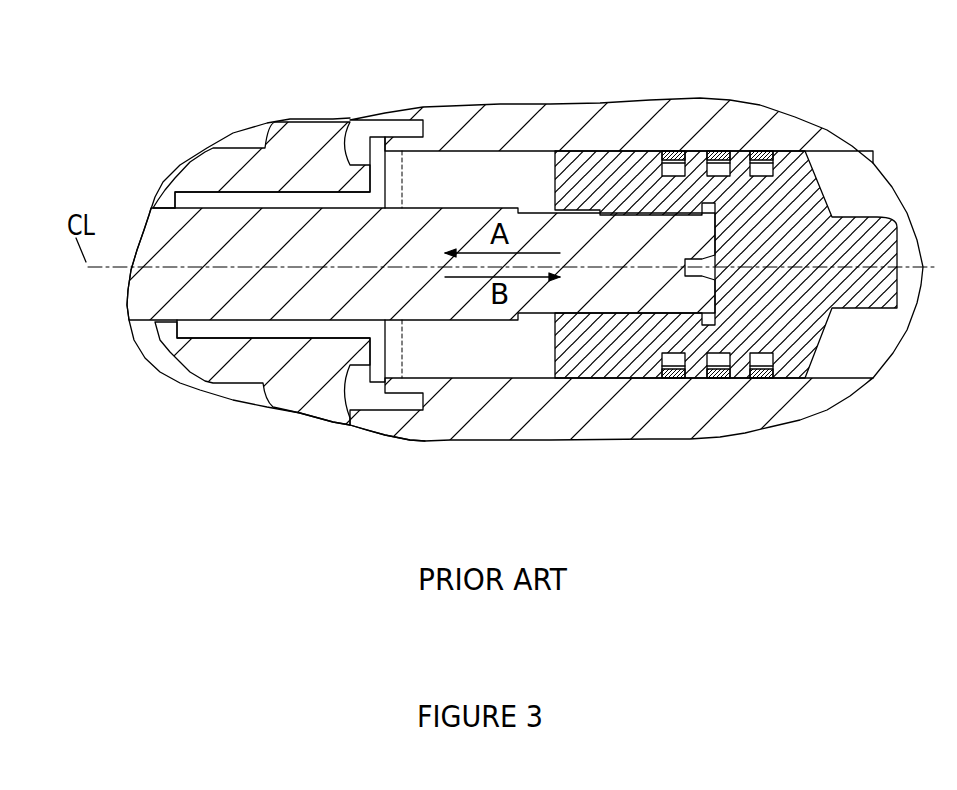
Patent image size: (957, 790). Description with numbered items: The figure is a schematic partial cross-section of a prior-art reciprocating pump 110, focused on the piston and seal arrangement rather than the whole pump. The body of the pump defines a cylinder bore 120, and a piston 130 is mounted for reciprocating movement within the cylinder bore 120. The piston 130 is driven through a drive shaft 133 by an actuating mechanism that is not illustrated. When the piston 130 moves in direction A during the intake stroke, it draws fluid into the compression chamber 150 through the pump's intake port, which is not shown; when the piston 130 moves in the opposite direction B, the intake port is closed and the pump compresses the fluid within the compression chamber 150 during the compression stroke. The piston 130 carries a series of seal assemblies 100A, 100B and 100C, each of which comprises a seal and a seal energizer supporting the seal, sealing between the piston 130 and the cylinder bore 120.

The reciprocating pump 110 is at (160, 106).
The cylinder bore 120 is at (468, 148).
The piston 130 is at (805, 280).
The drive shaft 133 is at (318, 280).
The compression chamber 150 is at (865, 335).
The seal assembly 100A is at (767, 148).
The seal assembly 100B is at (710, 148).
The seal assembly 100C is at (663, 148).